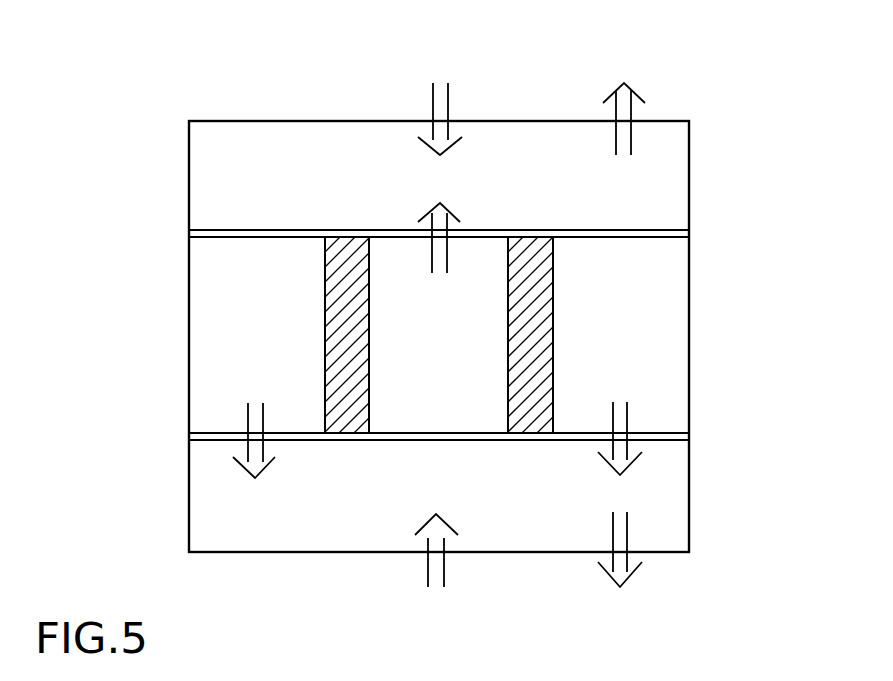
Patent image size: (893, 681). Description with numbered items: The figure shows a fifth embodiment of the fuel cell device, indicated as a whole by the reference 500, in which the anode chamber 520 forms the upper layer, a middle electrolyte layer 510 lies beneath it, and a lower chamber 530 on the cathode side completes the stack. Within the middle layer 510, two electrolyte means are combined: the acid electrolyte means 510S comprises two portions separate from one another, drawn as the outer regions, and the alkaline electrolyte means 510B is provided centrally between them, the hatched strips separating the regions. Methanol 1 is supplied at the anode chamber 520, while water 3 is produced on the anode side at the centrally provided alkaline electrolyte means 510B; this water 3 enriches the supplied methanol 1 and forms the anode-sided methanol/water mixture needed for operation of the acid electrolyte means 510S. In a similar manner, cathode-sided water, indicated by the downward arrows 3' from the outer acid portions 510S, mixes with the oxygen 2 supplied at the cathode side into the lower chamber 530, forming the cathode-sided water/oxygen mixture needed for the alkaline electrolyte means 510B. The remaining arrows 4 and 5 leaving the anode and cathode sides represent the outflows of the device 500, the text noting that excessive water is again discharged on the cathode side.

The light processing device 500 is at (190, 62).
The anode chamber 520 is at (176, 168).
The middle active layer 510 is at (176, 342).
The bottom layer 530 is at (176, 520).
The acid electrolyte means 510S is at (286, 347).
The alkaline electrolyte means 510B is at (470, 345).
The methanol 1 is at (440, 103).
The oxygen 2 is at (436, 569).
The water 3 is at (428, 232).
The light transmitted downward through side regions 3' is at (425, 447).
The light exiting from top 4 is at (624, 103).
The light exiting from bottom 5 is at (620, 568).